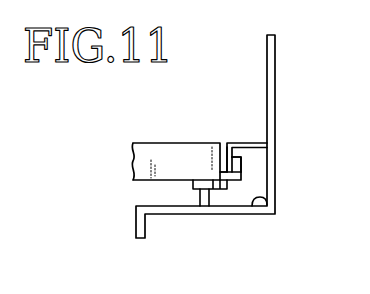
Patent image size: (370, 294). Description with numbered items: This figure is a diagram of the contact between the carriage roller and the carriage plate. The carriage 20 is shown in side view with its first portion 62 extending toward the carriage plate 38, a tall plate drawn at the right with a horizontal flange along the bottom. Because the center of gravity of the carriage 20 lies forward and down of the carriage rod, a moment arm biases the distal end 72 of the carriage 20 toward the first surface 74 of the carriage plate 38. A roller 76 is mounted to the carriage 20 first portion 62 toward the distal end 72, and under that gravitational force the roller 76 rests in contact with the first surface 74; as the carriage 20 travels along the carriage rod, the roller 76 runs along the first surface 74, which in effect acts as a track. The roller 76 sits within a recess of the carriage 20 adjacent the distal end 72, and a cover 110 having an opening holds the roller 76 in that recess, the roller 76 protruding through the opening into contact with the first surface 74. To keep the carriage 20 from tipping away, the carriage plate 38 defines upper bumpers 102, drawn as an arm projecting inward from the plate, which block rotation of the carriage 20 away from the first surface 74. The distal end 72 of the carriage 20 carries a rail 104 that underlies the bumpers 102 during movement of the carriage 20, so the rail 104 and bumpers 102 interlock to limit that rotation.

The carriage plate 38 is at (276, 69).
The carriage 20 is at (186, 137).
The first portion 62 is at (176, 141).
The upper bumpers 102 is at (240, 142).
The rail 104 is at (242, 164).
The distal end 72 is at (242, 173).
The roller 76 is at (200, 198).
The cover 110 is at (197, 183).
The first surface 74 is at (262, 202).